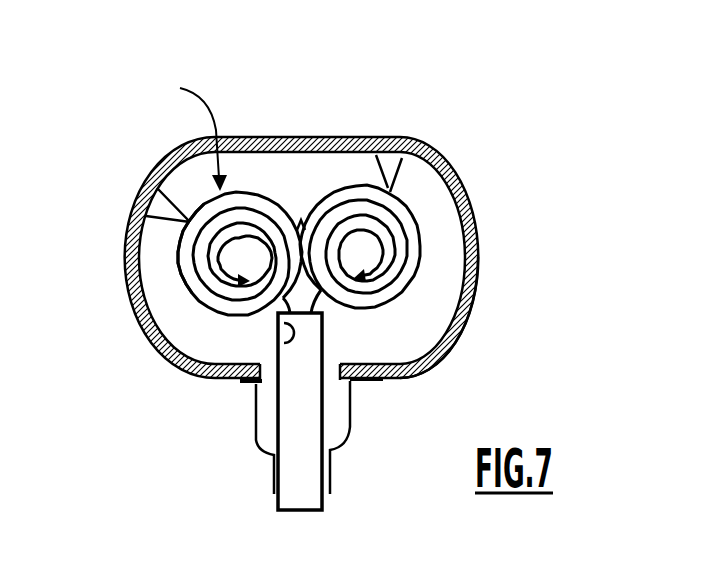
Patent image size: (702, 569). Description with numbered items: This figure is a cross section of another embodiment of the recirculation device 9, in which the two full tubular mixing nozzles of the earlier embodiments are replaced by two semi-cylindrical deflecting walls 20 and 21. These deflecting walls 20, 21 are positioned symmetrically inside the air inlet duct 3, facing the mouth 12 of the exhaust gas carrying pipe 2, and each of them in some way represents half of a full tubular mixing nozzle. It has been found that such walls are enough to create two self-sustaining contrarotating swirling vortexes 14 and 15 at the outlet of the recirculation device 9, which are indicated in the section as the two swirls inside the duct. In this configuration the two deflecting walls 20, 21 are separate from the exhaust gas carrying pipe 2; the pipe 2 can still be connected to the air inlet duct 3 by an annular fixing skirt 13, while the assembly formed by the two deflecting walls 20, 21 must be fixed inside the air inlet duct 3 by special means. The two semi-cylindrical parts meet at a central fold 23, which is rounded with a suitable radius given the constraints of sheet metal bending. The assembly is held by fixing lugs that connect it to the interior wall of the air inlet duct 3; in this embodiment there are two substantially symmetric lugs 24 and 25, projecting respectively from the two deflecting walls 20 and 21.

The exhaust gas carrying pipe 2 is at (278, 507).
The air inlet duct 3 is at (460, 173).
The recirculation device 9 is at (192, 127).
The mouth 12 is at (283, 338).
The annular fixing skirt 13 is at (335, 433).
The swirling vortex 14 is at (437, 356).
The swirling vortex 15 is at (217, 317).
The semi-cylindrical deflecting wall 20 is at (427, 250).
The semi-cylindrical deflecting wall 21 is at (177, 262).
The central fold 23 is at (301, 200).
The fixing lug 24 is at (378, 157).
The fixing lug 25 is at (130, 217).